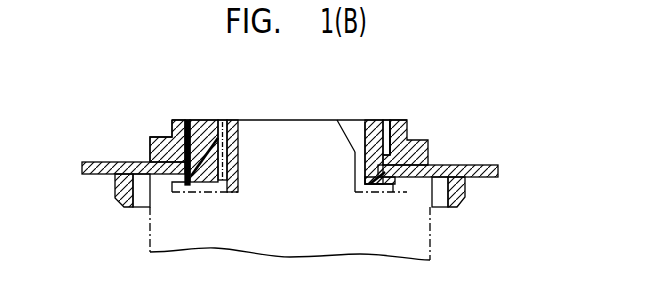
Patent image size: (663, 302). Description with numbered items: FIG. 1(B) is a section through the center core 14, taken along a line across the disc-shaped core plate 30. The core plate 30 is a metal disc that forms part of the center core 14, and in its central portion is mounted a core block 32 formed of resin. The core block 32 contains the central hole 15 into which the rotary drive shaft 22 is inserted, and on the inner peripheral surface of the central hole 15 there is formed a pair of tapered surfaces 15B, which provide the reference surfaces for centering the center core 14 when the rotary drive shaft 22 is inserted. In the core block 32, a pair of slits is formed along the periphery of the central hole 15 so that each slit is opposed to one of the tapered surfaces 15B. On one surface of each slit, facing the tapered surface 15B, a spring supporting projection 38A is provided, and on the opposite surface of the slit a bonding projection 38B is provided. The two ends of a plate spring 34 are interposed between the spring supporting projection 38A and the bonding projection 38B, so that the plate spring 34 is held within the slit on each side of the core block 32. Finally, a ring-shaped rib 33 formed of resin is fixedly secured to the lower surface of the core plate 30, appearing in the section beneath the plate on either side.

The center core 14 is at (468, 92).
The central hole 15 is at (295, 178).
The tapered surface 15B is at (360, 122).
The rotary drive shaft 22 is at (303, 120).
The core plate 30 is at (483, 177).
The core block 32 is at (402, 122).
The ring-shaped rib 33 is at (455, 208).
The plate spring 34 is at (218, 120).
The spring supporting projection 38A is at (198, 118).
The bonding projection 38B is at (230, 120).